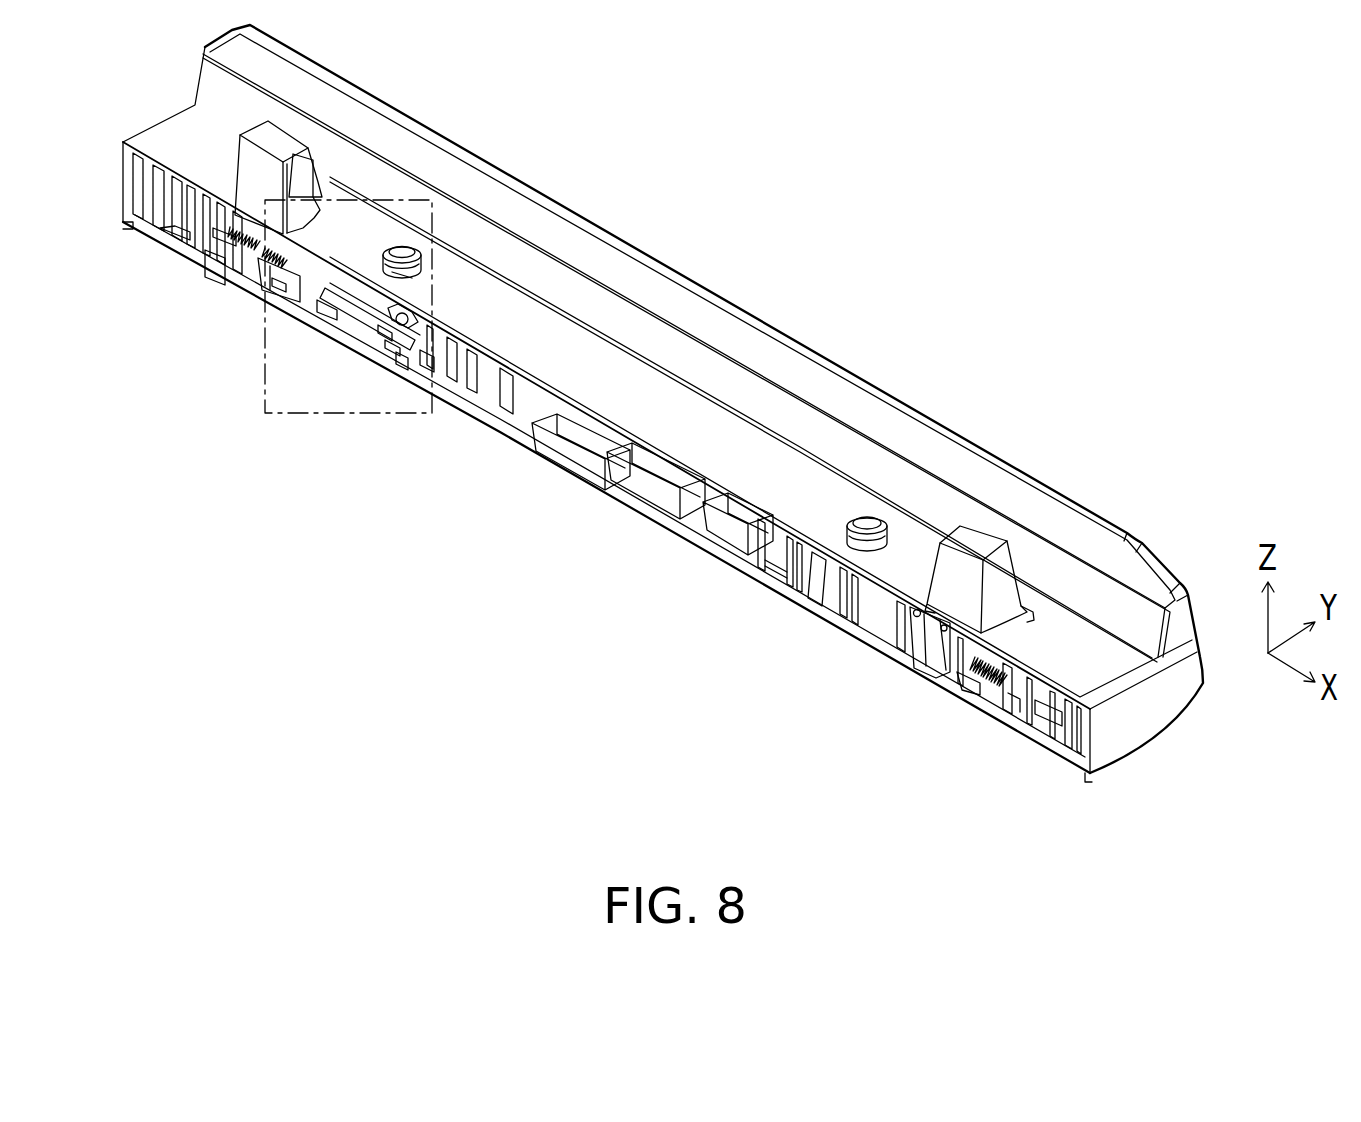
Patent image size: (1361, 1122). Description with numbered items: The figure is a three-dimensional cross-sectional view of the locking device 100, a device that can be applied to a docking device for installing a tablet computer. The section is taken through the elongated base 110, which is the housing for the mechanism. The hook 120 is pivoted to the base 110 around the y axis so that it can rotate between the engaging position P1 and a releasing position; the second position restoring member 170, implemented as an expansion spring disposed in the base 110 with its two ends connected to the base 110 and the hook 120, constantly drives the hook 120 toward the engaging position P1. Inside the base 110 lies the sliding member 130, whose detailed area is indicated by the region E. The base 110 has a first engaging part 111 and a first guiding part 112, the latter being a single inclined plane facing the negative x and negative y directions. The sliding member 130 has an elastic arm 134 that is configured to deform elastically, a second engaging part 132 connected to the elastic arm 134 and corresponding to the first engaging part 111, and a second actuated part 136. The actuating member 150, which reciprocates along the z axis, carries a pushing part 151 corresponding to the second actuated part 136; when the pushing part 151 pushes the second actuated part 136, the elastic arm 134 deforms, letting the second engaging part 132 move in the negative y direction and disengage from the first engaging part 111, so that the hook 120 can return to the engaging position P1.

The locking device 100 is at (1352, 818).
The base 110 is at (680, 307).
The first engaging part 111 is at (393, 360).
The first guiding part 112 is at (392, 345).
The hook 120 is at (307, 172).
The sliding member 130 is at (340, 328).
The second engaging part 132 is at (387, 330).
The elastic arm 134 is at (405, 247).
The second actuated part 136 is at (413, 317).
The actuating member 150 is at (347, 317).
The pushing part 151 is at (428, 362).
The second position restoring member 170 is at (222, 237).
The engaging position P1 is at (270, 283).
The enlarged region E is at (275, 413).